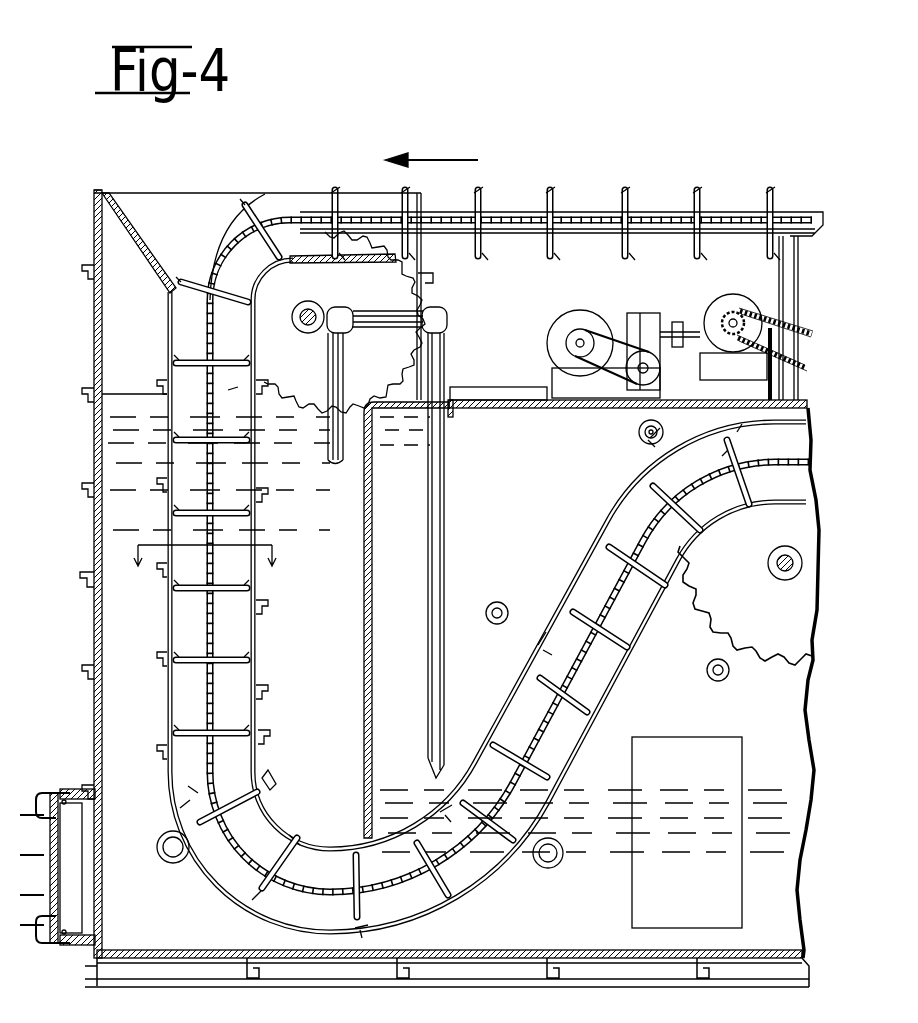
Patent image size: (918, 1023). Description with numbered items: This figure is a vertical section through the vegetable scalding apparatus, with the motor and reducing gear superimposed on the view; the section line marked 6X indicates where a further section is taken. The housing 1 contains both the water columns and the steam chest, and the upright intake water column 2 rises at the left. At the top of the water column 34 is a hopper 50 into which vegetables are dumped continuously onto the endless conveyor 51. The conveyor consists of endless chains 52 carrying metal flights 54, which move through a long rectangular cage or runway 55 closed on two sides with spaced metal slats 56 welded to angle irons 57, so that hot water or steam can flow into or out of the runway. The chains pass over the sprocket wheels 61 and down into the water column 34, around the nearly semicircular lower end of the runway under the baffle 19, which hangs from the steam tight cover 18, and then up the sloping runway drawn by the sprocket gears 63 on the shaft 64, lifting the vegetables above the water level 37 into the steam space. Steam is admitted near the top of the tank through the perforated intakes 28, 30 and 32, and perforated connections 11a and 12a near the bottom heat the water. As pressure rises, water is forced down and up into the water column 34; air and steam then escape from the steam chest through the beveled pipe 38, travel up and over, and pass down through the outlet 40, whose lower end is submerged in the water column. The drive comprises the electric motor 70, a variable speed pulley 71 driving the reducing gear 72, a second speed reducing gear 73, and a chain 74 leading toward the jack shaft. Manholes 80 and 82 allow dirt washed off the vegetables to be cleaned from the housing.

The housing 1 is at (92, 448).
The intake water column 2 is at (93, 332).
The hopper 50 is at (140, 205).
The endless conveyor 51 is at (272, 220).
The endless chain 52 is at (575, 210).
The flights 54 is at (700, 193).
The runway 55 is at (167, 327).
The metal slats 56 is at (257, 658).
The angle irons 57 is at (272, 778).
The sprocket wheels 61 is at (388, 300).
The outlet 40 is at (345, 466).
The pipe 38 is at (440, 722).
The water column 34 is at (338, 562).
The baffle 19 is at (372, 615).
The steam tight cover 18 is at (593, 407).
The steam intake 28 is at (645, 437).
The steam intake 30 is at (498, 625).
The steam intake 32 is at (707, 673).
The shaft 64 is at (777, 572).
The sprocket gears 63 is at (782, 650).
The electric motor 70 is at (549, 335).
The variable speed pulley 71 is at (584, 336).
The reducing gear 72 is at (642, 313).
The second speed reducing gear 73 is at (731, 296).
The chain 74 is at (798, 330).
The manhole 80 is at (70, 790).
The manhole 82 is at (690, 748).
The water level 37 is at (762, 795).
The perforations 11a is at (170, 865).
The perforations 12a is at (562, 863).
The section line 6X is at (210, 552).